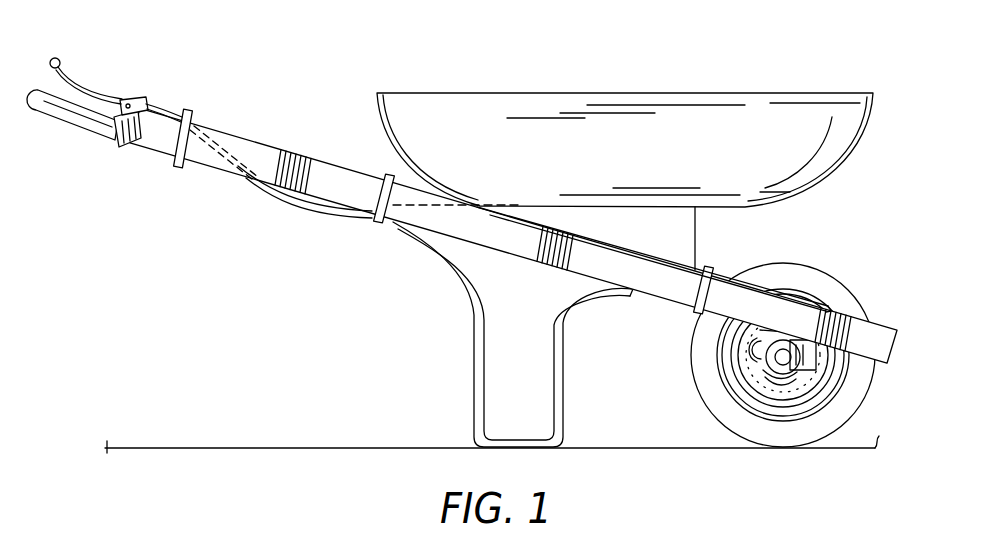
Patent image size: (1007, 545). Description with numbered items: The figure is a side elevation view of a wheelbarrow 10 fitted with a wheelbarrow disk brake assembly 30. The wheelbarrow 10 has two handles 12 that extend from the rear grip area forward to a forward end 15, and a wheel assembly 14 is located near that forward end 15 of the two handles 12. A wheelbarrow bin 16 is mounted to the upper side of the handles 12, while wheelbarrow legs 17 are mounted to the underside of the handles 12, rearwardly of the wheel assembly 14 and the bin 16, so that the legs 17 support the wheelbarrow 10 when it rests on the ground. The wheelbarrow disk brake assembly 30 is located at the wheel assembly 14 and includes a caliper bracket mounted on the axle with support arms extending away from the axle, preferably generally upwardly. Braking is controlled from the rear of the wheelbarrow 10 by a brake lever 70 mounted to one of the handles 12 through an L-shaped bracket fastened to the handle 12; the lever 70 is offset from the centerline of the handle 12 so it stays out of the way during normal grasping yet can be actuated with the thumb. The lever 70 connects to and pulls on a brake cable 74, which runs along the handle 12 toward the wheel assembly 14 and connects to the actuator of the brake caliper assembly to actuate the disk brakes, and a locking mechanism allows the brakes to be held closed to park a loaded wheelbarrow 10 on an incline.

The wheelbarrow 10 is at (760, 70).
The handles 12 is at (306, 158).
The wheel assembly 14 is at (705, 367).
The forward end 15 is at (846, 262).
The wheelbarrow bin 16 is at (608, 118).
The wheelbarrow legs 17 is at (482, 380).
The wheelbarrow disk brake assembly 30 is at (725, 408).
The brake lever 70 is at (154, 80).
The brake cable 74 is at (287, 188).